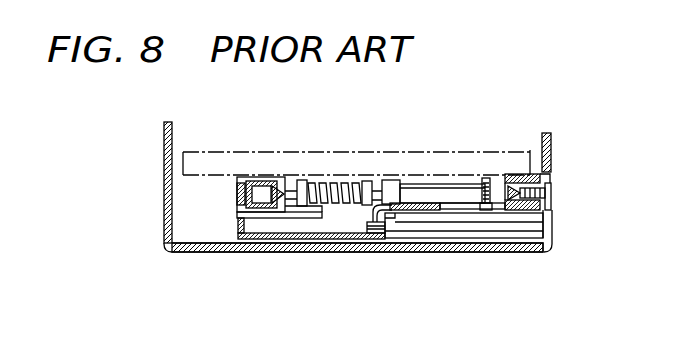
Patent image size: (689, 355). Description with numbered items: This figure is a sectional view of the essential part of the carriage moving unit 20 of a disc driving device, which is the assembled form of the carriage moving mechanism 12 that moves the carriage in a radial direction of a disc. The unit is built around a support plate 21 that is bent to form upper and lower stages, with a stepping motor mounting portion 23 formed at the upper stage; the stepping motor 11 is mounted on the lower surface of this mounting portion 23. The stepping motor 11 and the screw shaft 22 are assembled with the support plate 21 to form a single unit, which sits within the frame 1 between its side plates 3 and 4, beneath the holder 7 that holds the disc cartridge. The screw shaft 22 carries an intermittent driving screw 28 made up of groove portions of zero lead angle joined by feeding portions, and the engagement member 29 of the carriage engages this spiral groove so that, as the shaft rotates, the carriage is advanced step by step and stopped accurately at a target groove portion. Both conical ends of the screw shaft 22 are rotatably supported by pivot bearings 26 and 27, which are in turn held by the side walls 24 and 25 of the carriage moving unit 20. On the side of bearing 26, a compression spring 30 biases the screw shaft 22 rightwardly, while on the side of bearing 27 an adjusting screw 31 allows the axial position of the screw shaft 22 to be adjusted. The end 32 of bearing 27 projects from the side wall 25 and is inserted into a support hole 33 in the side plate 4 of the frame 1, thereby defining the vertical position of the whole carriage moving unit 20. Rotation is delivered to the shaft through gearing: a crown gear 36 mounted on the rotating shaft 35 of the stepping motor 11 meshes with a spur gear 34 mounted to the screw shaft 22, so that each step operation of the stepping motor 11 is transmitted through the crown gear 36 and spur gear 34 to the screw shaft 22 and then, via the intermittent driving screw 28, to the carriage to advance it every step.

The frame 1 is at (164, 217).
The side plate 3 is at (164, 146).
The side plate 4 is at (549, 135).
The holder 7 is at (183, 167).
The stepping motor 11 is at (540, 232).
The carriage moving mechanism 12 is at (298, 155).
The carriage moving unit 20 is at (393, 252).
The support plate 21 is at (368, 244).
The screw shaft 22 is at (410, 182).
The stepping motor mounting portion 23 is at (437, 211).
The side wall 24 is at (243, 220).
The side wall 25 is at (537, 173).
The bearing 26 is at (243, 180).
The bearing 27 is at (509, 182).
The intermittent driving screw 28 is at (350, 204).
The engagement member 29 is at (330, 206).
The compression spring 30 is at (261, 218).
The adjusting screw 31 is at (549, 199).
The end 32 is at (552, 168).
The support hole 33 is at (549, 192).
The spur gear 34 is at (485, 178).
The rotating shaft 35 is at (502, 231).
The crown gear 36 is at (470, 225).